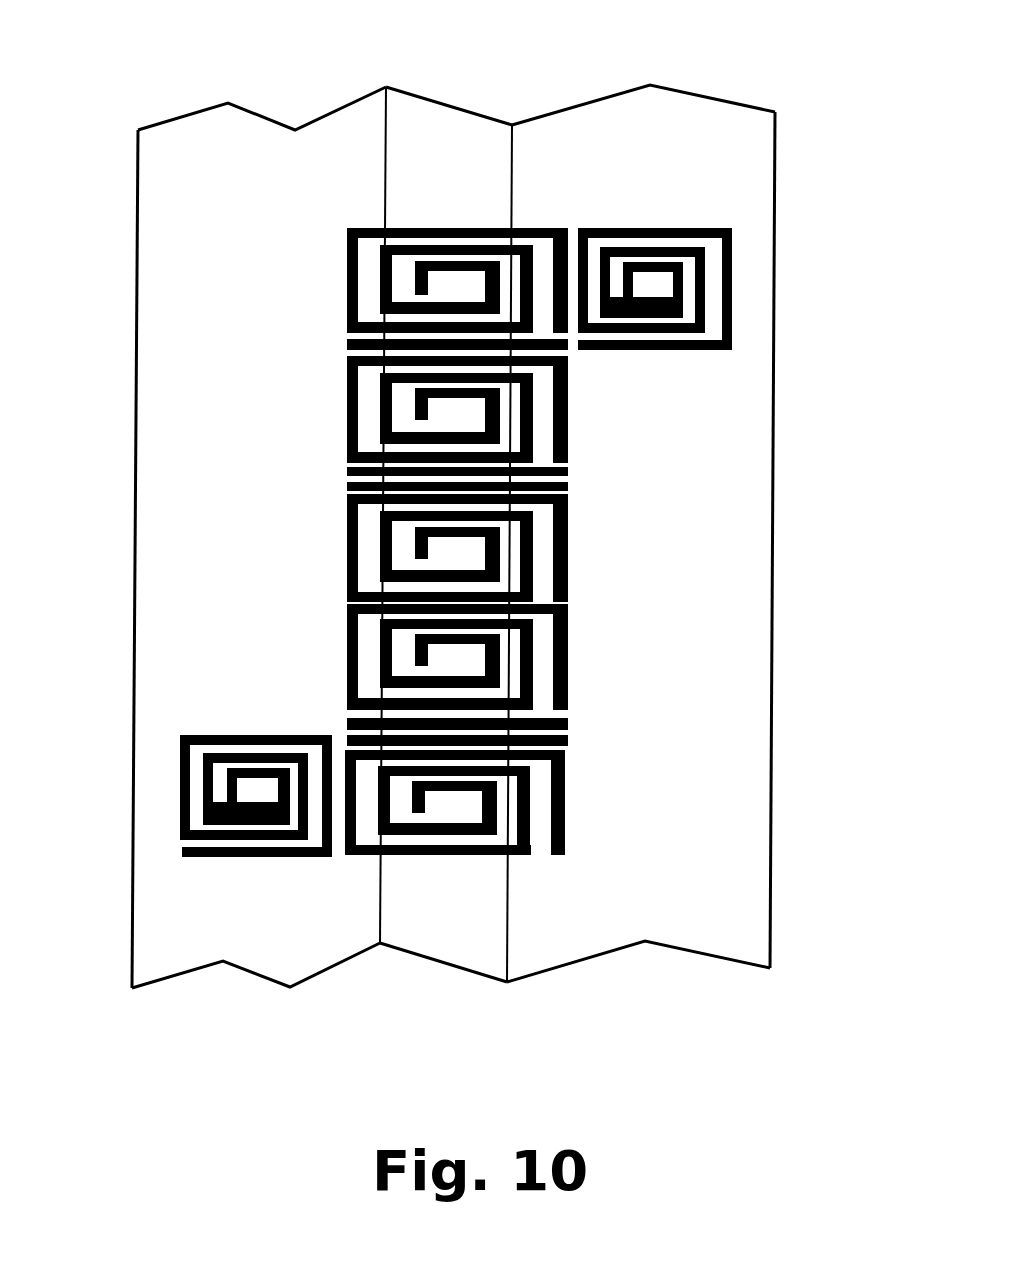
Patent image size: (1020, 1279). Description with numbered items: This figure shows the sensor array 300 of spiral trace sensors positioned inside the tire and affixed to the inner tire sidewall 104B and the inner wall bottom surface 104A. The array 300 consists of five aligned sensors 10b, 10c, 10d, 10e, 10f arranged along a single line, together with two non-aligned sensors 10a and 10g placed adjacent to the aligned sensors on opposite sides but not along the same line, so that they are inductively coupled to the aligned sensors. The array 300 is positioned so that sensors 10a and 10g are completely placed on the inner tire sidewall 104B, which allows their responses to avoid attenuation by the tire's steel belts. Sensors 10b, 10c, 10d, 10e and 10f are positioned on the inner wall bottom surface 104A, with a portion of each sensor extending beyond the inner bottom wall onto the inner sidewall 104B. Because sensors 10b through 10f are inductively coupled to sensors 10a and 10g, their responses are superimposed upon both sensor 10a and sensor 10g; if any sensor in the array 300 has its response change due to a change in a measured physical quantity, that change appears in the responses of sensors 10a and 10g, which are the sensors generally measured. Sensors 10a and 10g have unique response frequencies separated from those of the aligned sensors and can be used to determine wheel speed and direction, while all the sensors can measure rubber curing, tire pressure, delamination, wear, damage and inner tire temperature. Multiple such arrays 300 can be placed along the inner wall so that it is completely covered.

The sensor array 300 is at (465, 451).
The spiral trace sensor 10a is at (736, 289).
The spiral trace sensor 10b is at (490, 185).
The spiral trace sensor 10c is at (620, 441).
The spiral trace sensor 10d is at (621, 572).
The spiral trace sensor 10e is at (621, 685).
The spiral trace sensor 10f is at (616, 821).
The spiral trace sensor 10g is at (183, 787).
The inner wall bottom surface 104A is at (502, 576).
The inner tire sidewall 104B is at (504, 576).